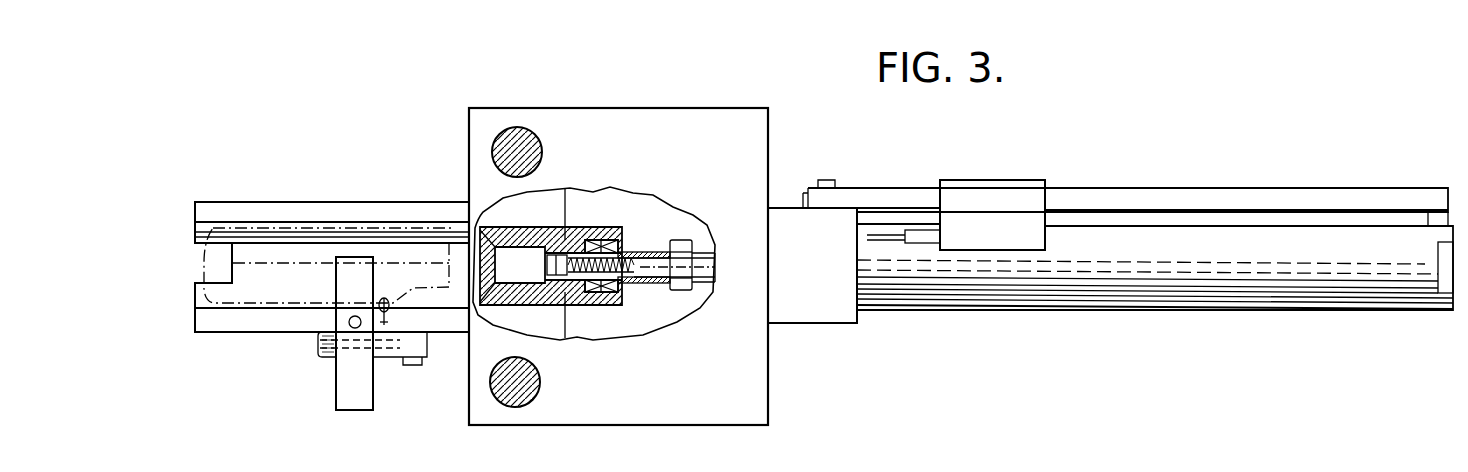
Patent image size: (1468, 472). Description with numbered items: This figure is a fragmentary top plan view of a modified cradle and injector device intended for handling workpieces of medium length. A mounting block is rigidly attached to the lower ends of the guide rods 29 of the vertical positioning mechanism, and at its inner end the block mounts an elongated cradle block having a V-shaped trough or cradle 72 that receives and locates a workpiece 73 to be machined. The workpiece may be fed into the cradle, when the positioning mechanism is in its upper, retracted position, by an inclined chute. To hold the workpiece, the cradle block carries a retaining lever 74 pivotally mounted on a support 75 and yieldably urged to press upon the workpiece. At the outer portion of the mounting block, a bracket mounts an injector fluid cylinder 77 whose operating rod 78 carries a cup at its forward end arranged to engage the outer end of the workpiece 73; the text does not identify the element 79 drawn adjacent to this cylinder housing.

The guide rods 29 is at (540, 147).
The V-shaped trough or cradle 72 is at (425, 240).
The workpiece 73 is at (292, 225).
The retaining lever 74 is at (345, 383).
The support 75 is at (390, 358).
The injector fluid cylinder 77 is at (1070, 300).
The operating rod 78 is at (700, 286).
The housing 79 is at (573, 229).